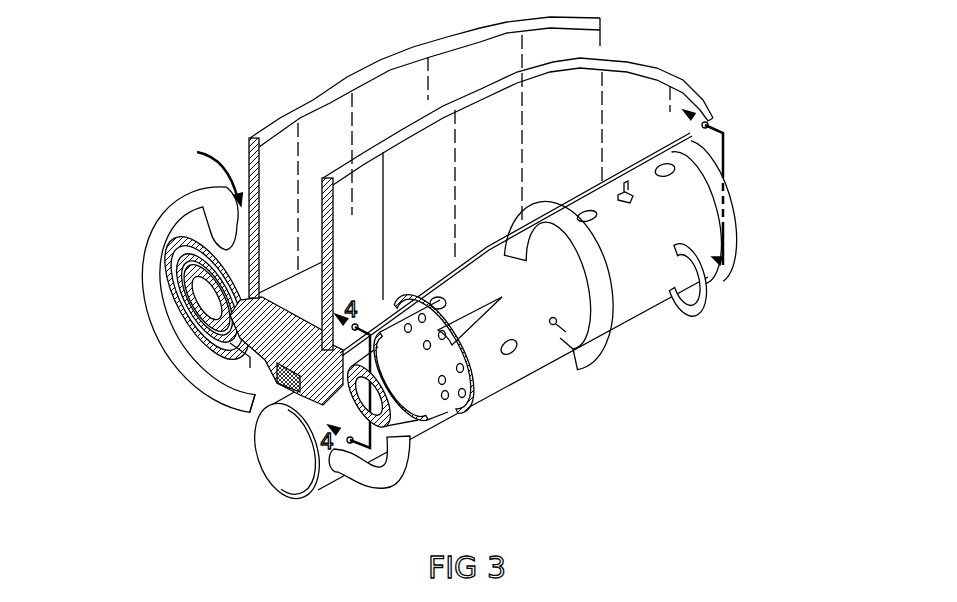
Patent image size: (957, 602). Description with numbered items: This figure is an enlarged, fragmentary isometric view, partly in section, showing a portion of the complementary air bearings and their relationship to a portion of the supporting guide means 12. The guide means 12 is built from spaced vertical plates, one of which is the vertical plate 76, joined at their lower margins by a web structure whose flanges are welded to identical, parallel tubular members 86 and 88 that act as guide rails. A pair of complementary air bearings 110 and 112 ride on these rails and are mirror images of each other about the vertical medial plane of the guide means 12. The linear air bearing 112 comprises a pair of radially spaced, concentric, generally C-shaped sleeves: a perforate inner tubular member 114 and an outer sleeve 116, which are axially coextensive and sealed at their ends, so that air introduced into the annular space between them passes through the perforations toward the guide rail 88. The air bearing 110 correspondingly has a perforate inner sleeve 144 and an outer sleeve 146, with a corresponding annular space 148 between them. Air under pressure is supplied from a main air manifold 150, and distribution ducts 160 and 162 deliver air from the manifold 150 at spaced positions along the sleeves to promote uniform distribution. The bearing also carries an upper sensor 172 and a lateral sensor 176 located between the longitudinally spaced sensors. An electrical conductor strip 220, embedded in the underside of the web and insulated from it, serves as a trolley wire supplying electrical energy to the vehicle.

The guide means 12 is at (250, 197).
The air bearing 110 is at (197, 153).
The vertical plate 76 is at (558, 88).
The linear air bearing 112 is at (487, 243).
The outer sleeve 116 is at (502, 393).
The distribution duct 160 is at (160, 217).
The distribution duct 162 is at (683, 307).
The upper sensor 172 is at (627, 187).
The lateral sensor 176 is at (560, 338).
The inner tubular member 114 is at (440, 410).
The tubular member 88 is at (372, 400).
The main air manifold 150 is at (258, 465).
The electrical conductor strip 220 is at (250, 410).
The tubular member 86 is at (210, 260).
The perforate inner sleeve 144 is at (187, 293).
The outer sleeve 146 is at (190, 317).
The space 148 is at (230, 355).